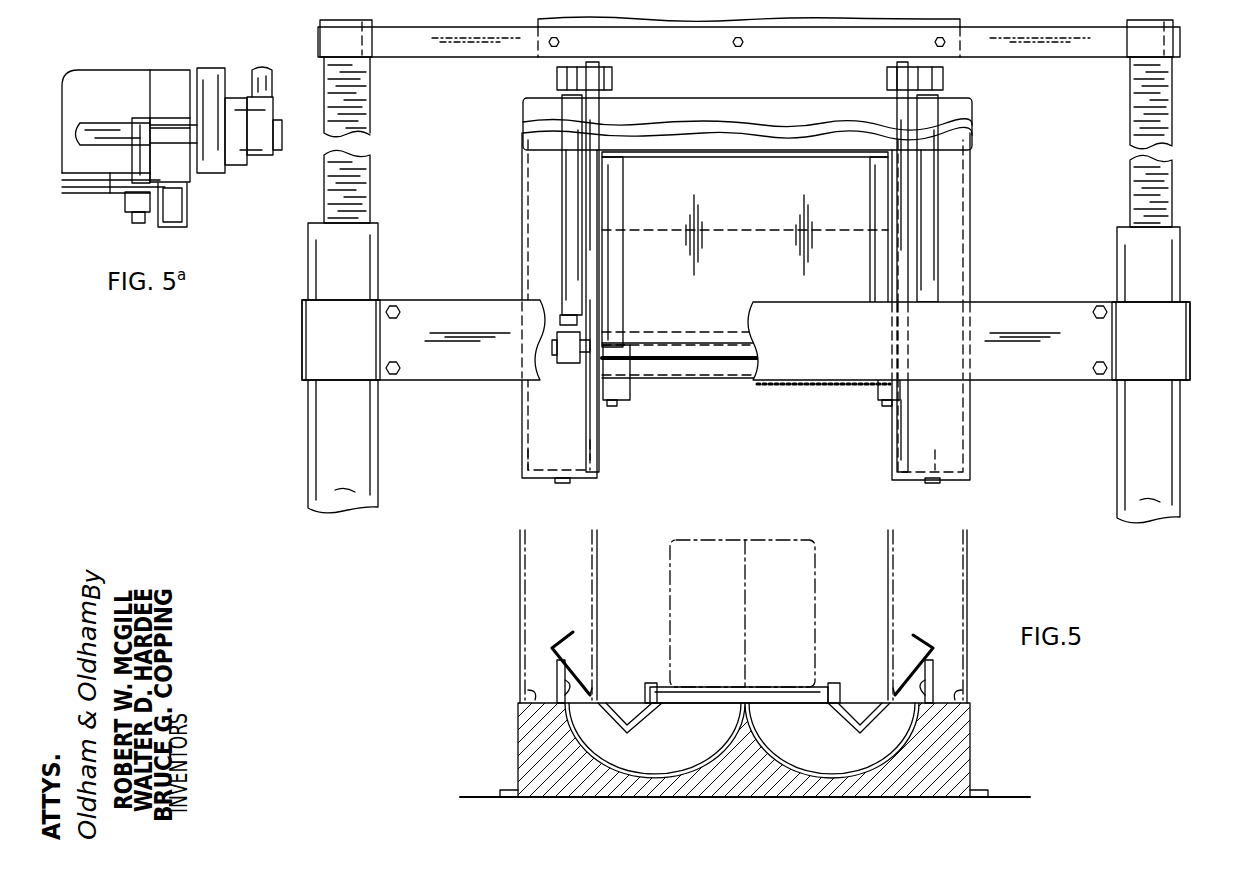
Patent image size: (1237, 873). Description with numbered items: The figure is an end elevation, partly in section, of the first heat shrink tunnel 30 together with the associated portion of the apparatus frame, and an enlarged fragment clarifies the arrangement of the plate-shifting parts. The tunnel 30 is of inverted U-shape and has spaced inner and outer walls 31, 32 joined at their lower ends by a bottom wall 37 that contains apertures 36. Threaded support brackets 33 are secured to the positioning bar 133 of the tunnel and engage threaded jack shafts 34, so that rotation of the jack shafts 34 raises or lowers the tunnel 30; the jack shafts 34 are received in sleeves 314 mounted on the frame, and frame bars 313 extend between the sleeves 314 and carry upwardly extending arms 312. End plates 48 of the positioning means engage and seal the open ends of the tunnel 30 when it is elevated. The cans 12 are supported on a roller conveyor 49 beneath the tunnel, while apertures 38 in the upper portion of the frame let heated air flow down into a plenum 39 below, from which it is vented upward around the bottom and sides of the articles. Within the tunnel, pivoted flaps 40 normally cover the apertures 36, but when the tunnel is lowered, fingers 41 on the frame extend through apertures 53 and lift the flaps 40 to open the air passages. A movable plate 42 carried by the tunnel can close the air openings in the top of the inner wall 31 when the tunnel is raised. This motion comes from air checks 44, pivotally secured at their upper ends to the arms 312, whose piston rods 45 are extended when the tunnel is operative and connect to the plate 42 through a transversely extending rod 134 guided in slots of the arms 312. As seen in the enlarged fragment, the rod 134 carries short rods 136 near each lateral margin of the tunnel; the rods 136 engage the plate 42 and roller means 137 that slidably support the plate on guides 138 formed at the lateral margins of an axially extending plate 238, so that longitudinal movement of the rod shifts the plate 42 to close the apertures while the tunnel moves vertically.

In FIG. 5, the cans 12 is at (752, 532).
In FIG. 5, the first heat shrink tunnel 30 is at (981, 167).
In FIG. 5, the inner wall 31 is at (754, 240).
In FIG. 5a, the inner wall 31 is at (90, 183).
In FIG. 5, the outer wall 32 is at (523, 205).
In FIG. 5, the threaded support brackets 33 is at (360, 48).
In FIG. 5, the threaded jack shafts 34 is at (372, 168).
In FIG. 5, the apertures in bottom wall 36 is at (563, 685).
In FIG. 5, the bottom wall 37 is at (525, 688).
In FIG. 5, the frame apertures 38 is at (576, 708).
In FIG. 5, the plenum 39 is at (710, 765).
In FIG. 5, the flaps 40 is at (535, 470).
In FIG. 5, the fingers 41 is at (557, 662).
In FIG. 5a, the plate 42 is at (110, 195).
In FIG. 5, the air checks 44 is at (570, 157).
In FIG. 5, the piston rods 45 is at (565, 338).
In FIG. 5a, the piston rods 45 is at (265, 80).
In FIG. 5, the end plates 48 is at (612, 200).
In FIG. 5, the roller conveyor 49 is at (760, 700).
In FIG. 5, the apertures 53 is at (561, 484).
In FIG. 5, the bar 133 is at (486, 42).
In FIG. 5, the transversely extending rod 134 is at (680, 346).
In FIG. 5a, the transversely extending rod 134 is at (105, 128).
In FIG. 5a, the short rods 136 is at (132, 162).
In FIG. 5a, the roller means 137 is at (180, 210).
In FIG. 5a, the guides 138 is at (175, 228).
In FIG. 5a, the plate 238 is at (97, 193).
In FIG. 5, the arms 312 is at (600, 107).
In FIG. 5a, the arms 312 is at (215, 172).
In FIG. 5, the frame bars 313 is at (447, 312).
In FIG. 5, the sleeves 314 is at (372, 437).